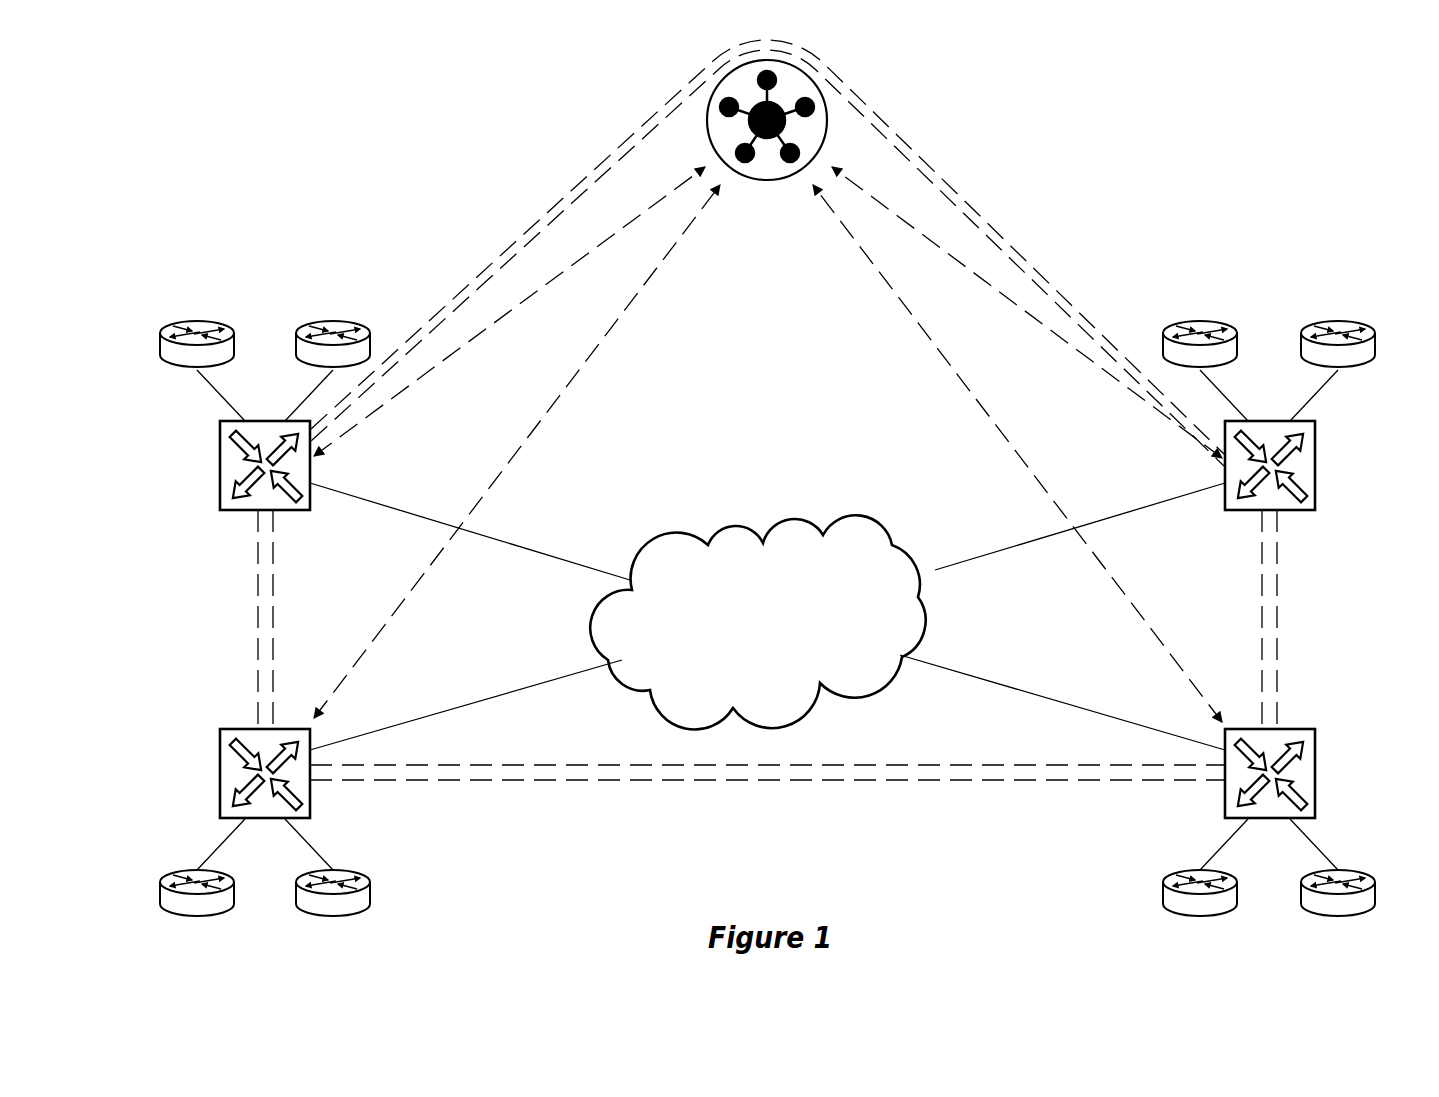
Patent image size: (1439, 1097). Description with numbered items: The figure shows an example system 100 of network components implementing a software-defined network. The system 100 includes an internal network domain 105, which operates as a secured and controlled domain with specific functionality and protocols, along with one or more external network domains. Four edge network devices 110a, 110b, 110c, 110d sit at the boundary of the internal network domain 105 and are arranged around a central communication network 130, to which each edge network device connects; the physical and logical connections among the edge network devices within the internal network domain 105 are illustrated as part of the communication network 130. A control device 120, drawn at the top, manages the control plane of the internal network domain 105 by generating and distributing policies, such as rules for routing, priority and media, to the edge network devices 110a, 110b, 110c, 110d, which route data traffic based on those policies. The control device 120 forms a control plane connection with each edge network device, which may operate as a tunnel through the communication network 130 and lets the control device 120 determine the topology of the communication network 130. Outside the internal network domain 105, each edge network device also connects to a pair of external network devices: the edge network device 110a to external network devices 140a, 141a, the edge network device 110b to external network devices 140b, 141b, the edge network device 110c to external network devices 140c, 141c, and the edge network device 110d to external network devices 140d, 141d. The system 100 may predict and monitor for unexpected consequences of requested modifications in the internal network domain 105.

The system 100 is at (1342, 118).
The internal network domain 105 is at (1025, 248).
The edge network device 110a is at (220, 465).
The edge network device 110b is at (220, 773).
The edge network device 110c is at (1315, 465).
The edge network device 110d is at (1315, 773).
The control device 120 is at (826, 118).
The communication network 130 is at (785, 630).
The external network device 140a is at (164, 327).
The external network device 141a is at (300, 327).
The external network device 140b is at (164, 876).
The external network device 141b is at (368, 876).
The external network device 140c is at (1234, 327).
The external network device 141c is at (1371, 327).
The external network device 140d is at (1168, 876).
The external network device 141d is at (1371, 876).